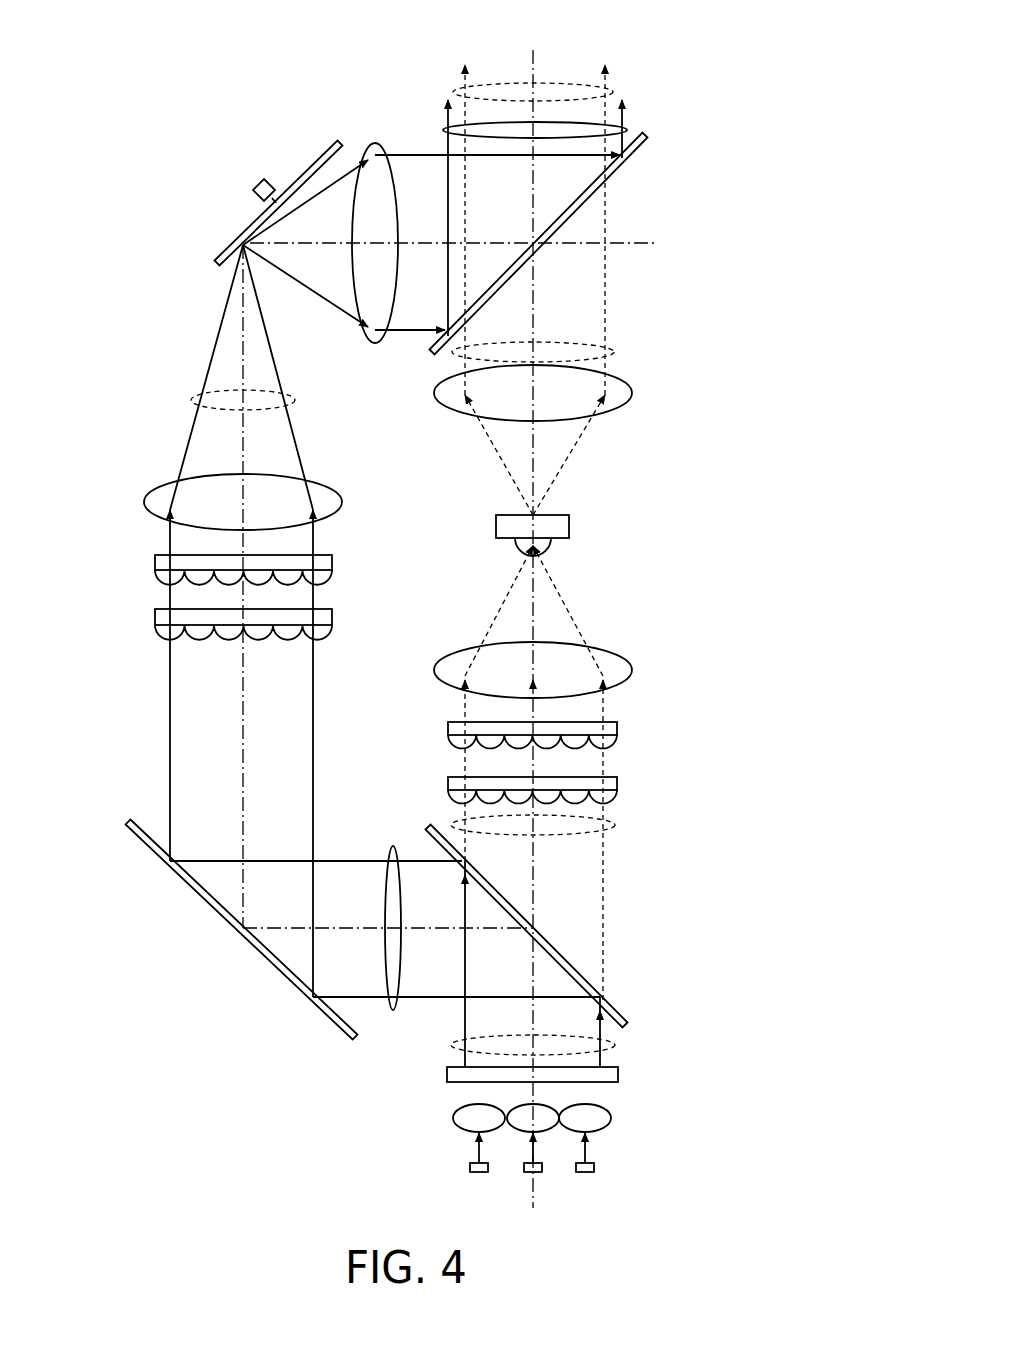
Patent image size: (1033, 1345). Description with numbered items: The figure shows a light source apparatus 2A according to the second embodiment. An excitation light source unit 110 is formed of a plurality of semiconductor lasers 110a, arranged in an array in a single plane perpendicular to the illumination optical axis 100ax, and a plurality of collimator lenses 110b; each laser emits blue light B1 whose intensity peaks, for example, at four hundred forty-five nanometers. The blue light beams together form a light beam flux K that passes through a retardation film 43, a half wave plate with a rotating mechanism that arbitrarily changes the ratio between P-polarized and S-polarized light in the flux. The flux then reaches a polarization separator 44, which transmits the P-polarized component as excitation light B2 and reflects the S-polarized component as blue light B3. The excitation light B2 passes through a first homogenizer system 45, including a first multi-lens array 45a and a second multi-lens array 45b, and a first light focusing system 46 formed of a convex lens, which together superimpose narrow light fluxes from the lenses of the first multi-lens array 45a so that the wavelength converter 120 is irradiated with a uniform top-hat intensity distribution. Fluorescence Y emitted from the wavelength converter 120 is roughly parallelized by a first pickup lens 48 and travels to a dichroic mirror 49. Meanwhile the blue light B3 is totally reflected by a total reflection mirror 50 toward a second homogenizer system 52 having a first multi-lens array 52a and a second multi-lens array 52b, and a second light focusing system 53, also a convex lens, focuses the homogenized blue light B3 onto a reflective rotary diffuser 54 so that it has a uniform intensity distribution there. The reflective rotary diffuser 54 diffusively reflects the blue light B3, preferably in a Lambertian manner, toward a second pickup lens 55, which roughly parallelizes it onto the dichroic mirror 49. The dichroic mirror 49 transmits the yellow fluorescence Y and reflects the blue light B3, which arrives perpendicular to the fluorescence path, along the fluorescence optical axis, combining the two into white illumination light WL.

The light source apparatus 2A is at (717, 81).
The excitation light source unit 110 is at (455, 1137).
The semiconductor lasers 110a is at (470, 1167).
The collimator lenses 110b is at (455, 1118).
The blue light B1 is at (588, 1150).
The retardation film 43 is at (618, 1075).
The light beam flux K is at (615, 1045).
The polarization separator 44 is at (625, 1018).
The total reflection mirror 50 is at (150, 855).
The blue light B3 is at (392, 848).
The second homogenizer system 52 is at (183, 592).
The first multi-lens array 52a is at (207, 619).
The second multi-lens array 52b is at (155, 562).
The second light focusing system 53 is at (150, 502).
The reflective rotary diffuser 54 is at (218, 262).
The second pickup lens 55 is at (363, 300).
The dichroic mirror 49 is at (646, 137).
The fluorescence Y is at (450, 92).
The white illumination light WL is at (343, 37).
The first pickup lens 48 is at (632, 395).
The wavelength converter 120 is at (569, 527).
The first light focusing system 46 is at (632, 670).
The first homogenizer system 45 is at (598, 760).
The first multi-lens array 45a is at (574, 788).
The second multi-lens array 45b is at (617, 731).
The excitation light B2 is at (612, 828).
The illumination optical axis 100ax is at (533, 1185).